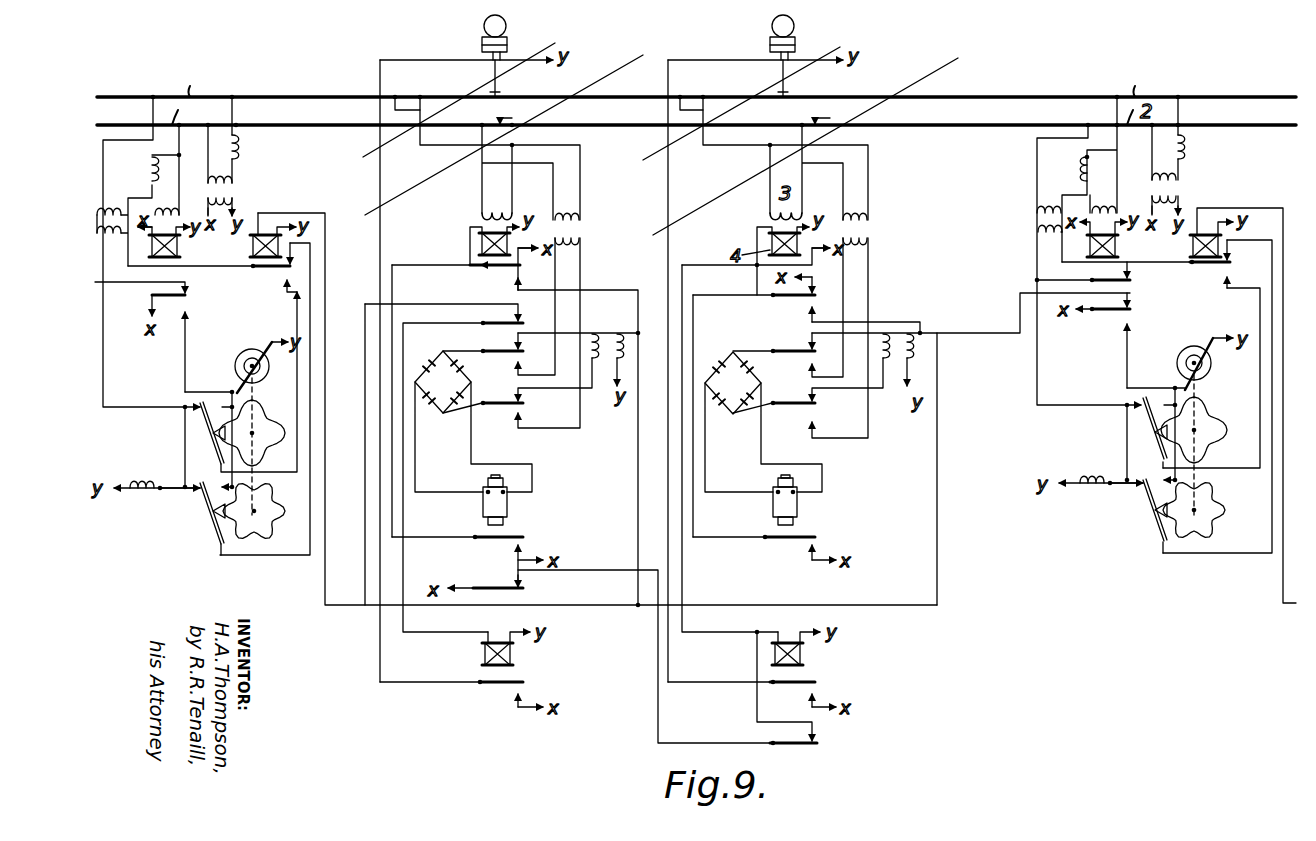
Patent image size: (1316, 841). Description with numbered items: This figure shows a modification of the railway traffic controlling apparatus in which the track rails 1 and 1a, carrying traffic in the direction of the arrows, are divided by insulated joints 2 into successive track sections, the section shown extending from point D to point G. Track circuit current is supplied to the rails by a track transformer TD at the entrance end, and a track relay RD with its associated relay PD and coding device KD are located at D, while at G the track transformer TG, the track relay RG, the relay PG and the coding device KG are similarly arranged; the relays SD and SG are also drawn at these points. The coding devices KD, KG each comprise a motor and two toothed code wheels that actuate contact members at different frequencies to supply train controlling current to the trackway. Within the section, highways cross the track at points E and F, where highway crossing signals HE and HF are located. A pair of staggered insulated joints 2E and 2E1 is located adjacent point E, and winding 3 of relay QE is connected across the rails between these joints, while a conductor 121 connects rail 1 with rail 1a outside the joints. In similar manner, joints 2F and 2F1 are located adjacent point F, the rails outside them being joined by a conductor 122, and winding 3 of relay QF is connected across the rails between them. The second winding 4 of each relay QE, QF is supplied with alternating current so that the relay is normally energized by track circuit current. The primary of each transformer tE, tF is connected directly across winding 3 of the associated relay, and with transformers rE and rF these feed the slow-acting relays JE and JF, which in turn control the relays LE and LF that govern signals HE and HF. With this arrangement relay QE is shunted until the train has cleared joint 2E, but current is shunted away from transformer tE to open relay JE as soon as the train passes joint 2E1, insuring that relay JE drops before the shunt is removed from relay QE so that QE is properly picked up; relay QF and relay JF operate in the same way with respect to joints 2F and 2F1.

The track rail 1 is at (996, 97).
The track rail 1a is at (998, 132).
The insulated joints 2 is at (171, 112).
The point D is at (188, 79).
The relay S at station D SD is at (98, 220).
The track transformer TD is at (222, 155).
The track relay RD is at (175, 246).
The relay P at station D PD is at (246, 248).
The coding device KD is at (256, 356).
The highway crossing signal HE is at (482, 48).
The insulated joint 2E1 is at (408, 96).
The conductor 121 is at (432, 106).
The point E is at (514, 81).
The insulated joint 2E is at (516, 157).
The relay winding 3 is at (497, 200).
The transformer tE is at (585, 222).
The relay QE is at (482, 250).
The relay winding 4 is at (515, 239).
The transformer rE is at (571, 353).
The slow-acting relay JE is at (507, 512).
The relay LE is at (510, 657).
The highway crossing signal HF is at (768, 48).
The insulated joint 2F1 is at (693, 96).
The conductor 122 is at (720, 106).
The point F is at (803, 81).
The insulated joint 2F is at (810, 157).
The transformer tF is at (873, 220).
The relay QF is at (772, 244).
The transformer rF is at (897, 363).
The slow-acting relay JF is at (797, 512).
The relay LF is at (800, 657).
The point G is at (1132, 79).
The relay S at station G SG is at (1037, 225).
The track transformer TG is at (1180, 190).
The track relay RG is at (1118, 245).
The relay P at station G PG is at (1192, 246).
The coding device KG is at (1196, 355).